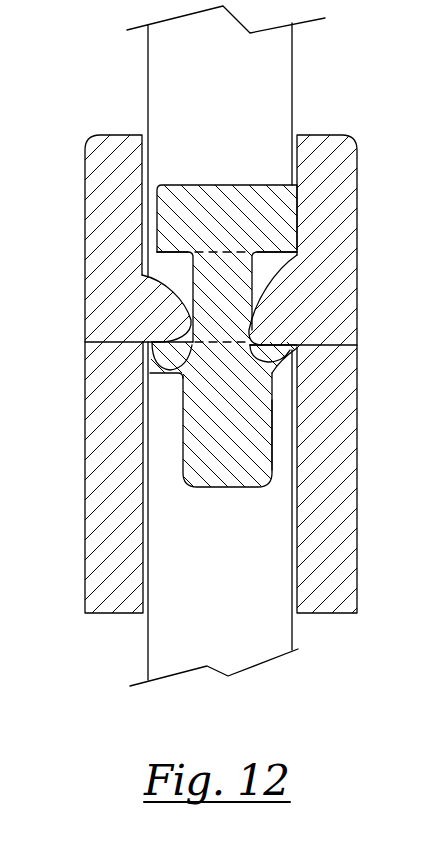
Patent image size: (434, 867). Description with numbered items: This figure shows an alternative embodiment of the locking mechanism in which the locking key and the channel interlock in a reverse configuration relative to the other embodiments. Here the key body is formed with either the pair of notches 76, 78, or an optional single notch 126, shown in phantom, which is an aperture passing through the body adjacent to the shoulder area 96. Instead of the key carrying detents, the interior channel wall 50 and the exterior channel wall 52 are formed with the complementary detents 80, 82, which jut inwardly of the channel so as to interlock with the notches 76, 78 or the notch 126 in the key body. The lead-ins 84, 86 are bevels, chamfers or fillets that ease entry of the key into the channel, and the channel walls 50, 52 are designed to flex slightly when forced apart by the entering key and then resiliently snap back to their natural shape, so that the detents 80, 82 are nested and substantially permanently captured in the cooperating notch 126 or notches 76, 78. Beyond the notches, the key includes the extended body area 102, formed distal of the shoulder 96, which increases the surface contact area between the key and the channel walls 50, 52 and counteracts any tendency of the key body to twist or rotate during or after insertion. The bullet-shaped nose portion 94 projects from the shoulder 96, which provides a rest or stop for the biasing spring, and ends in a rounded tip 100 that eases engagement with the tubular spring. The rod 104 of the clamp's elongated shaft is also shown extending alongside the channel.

The interior channel wall 50 is at (109, 375).
The exterior channel wall 52 is at (331, 372).
The notch 76 is at (155, 280).
The notch 78 is at (300, 256).
The detent 80 is at (172, 376).
The detent 82 is at (357, 345).
The lead-in 84 is at (168, 267).
The lead-in 86 is at (266, 260).
The nose portion 94 is at (283, 377).
The shoulder 96 is at (272, 437).
The tip 100 is at (228, 487).
The extended body area 102 is at (219, 331).
The rod 104 is at (292, 50).
The single notch 126 is at (240, 307).